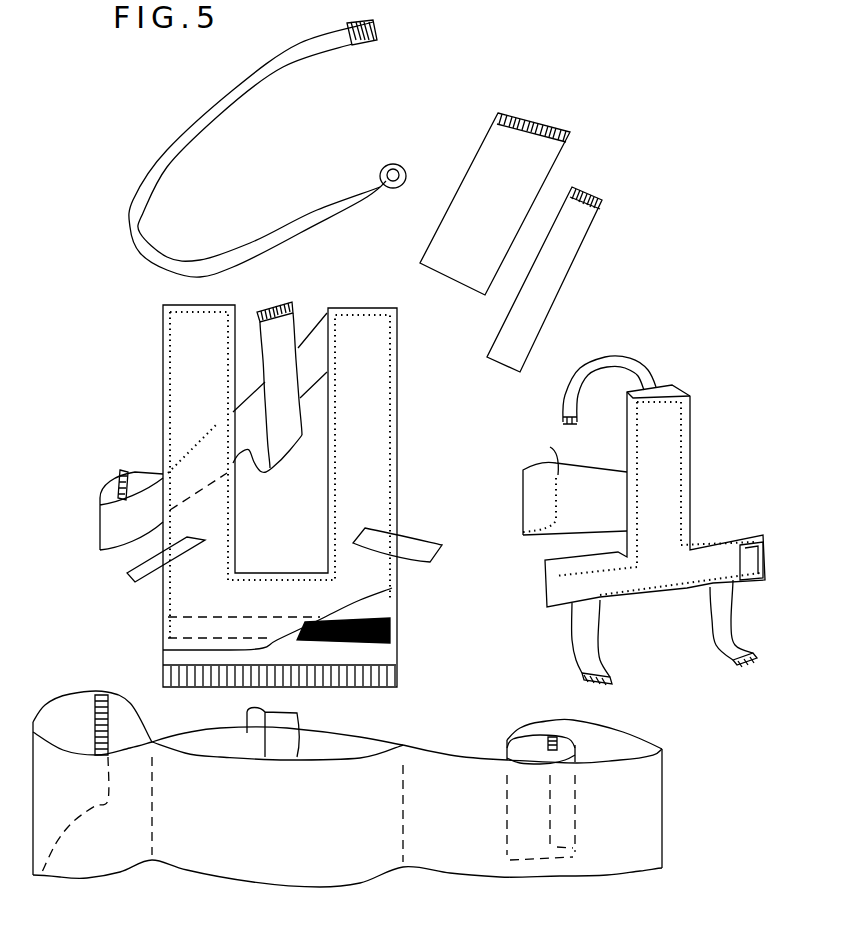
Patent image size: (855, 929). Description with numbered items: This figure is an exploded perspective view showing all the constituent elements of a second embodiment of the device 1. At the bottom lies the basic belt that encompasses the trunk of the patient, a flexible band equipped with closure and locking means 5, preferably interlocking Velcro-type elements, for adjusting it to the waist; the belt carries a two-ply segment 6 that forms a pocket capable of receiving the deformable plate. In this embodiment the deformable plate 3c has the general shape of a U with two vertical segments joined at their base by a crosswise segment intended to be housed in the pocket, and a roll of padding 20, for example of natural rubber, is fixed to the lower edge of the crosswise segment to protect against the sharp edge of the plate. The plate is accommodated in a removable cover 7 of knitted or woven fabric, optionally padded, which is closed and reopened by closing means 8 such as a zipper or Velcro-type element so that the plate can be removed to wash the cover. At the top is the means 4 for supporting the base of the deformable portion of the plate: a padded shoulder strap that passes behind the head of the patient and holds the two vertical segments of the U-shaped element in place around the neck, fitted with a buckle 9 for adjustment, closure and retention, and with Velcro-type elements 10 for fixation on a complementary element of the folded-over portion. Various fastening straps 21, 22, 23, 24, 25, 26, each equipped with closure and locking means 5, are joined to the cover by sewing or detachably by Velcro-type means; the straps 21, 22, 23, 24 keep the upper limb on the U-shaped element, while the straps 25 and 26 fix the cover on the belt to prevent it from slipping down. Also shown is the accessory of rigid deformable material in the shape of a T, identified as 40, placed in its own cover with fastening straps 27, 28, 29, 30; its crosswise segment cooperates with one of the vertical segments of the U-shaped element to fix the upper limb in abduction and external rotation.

The device 1 is at (432, 465).
The deformable plate 3c is at (378, 605).
The means for supporting the base of the deformable portion of the plate 4 is at (186, 113).
The closure and locking means 5 is at (290, 302).
The 2-ply segment 6 is at (360, 732).
The removable cover 7 is at (178, 390).
The closing means 8 is at (397, 681).
The buckle 9 is at (393, 163).
The Velcro-type elements 10 is at (366, 46).
The roll of padding 20 is at (367, 645).
The fastening strap 21 is at (282, 445).
The fastening strap 22 is at (460, 228).
The fastening strap 23 is at (545, 292).
The fastening strap 24 is at (104, 529).
The fastening strap 25 is at (130, 583).
The fastening strap 26 is at (393, 430).
The fastening strap 27 is at (567, 383).
The fastening strap 28 is at (522, 517).
The fastening strap 29 is at (573, 653).
The fastening strap 30 is at (730, 613).
The T-shaped accessory 40 is at (763, 537).